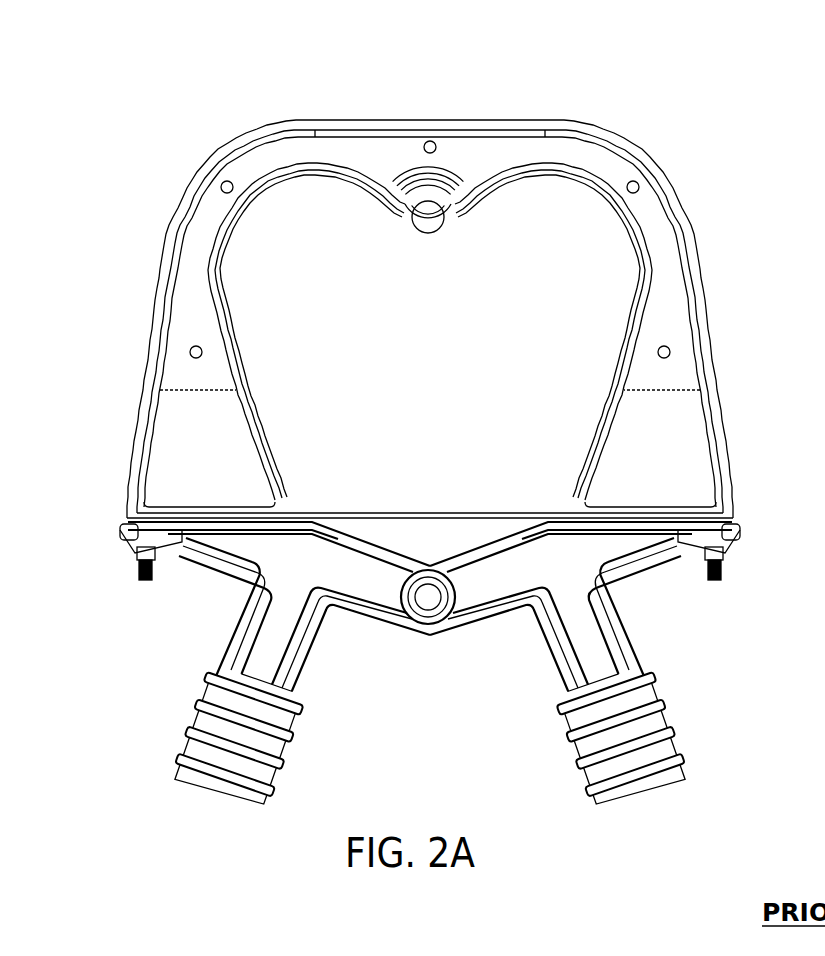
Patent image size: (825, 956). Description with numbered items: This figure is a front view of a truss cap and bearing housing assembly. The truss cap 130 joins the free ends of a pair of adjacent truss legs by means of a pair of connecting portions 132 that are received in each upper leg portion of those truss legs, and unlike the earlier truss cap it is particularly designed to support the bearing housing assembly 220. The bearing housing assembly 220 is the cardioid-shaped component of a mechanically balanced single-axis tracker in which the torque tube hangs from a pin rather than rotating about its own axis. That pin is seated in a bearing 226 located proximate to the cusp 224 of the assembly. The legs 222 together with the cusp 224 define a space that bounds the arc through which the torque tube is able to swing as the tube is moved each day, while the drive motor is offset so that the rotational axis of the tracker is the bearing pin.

The truss cap 130 is at (462, 666).
The connecting portions 132 is at (283, 781).
The bearing housing assembly 220 is at (440, 283).
The legs 222 is at (157, 285).
The cusp 224 is at (388, 140).
The bearing 226 is at (427, 222).